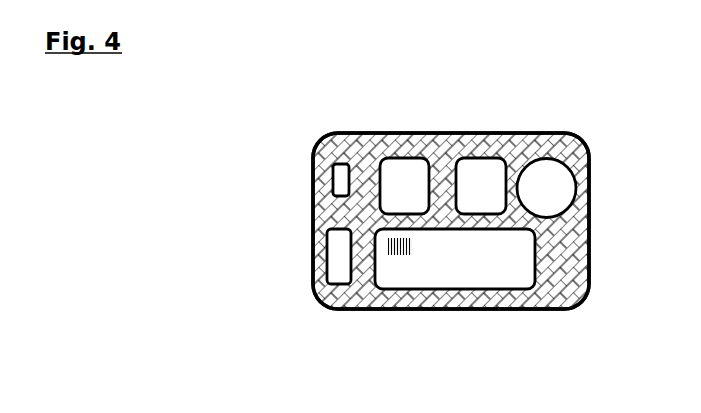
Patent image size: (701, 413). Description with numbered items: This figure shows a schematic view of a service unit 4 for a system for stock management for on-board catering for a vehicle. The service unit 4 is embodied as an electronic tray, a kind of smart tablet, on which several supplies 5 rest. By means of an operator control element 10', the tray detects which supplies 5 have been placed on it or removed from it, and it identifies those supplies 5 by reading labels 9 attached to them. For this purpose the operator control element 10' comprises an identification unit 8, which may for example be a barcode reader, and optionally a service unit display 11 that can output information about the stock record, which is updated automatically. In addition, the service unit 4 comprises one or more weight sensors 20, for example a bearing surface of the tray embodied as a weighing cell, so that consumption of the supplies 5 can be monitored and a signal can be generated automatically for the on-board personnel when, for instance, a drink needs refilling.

The service unit 4 is at (393, 132).
The supplies 5 is at (413, 199).
The identification unit 8 is at (312, 160).
The labels 9 is at (411, 246).
The operator control element 10' is at (403, 221).
The service unit display 11 is at (312, 248).
The weight sensors 20 is at (516, 154).